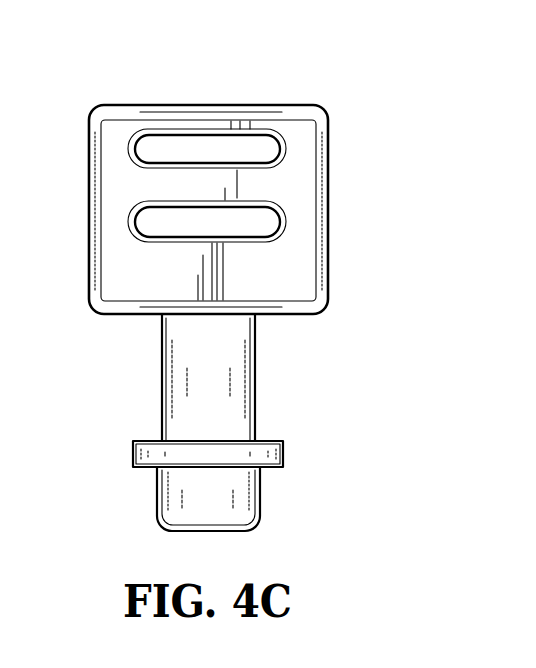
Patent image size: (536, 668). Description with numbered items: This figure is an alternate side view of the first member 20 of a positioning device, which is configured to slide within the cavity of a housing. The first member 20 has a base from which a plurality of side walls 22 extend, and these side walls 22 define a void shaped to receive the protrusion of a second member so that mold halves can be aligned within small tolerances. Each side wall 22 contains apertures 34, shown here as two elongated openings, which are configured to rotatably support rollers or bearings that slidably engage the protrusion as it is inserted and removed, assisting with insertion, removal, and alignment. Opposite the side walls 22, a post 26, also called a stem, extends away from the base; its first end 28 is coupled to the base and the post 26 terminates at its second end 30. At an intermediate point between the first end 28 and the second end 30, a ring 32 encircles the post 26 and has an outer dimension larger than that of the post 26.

The first member 20 is at (227, 281).
The side walls 22 is at (97, 287).
The apertures 34 is at (275, 148).
The first end 28 is at (185, 328).
The post 26 is at (228, 408).
The ring 32 is at (283, 455).
The second end 30 is at (230, 531).